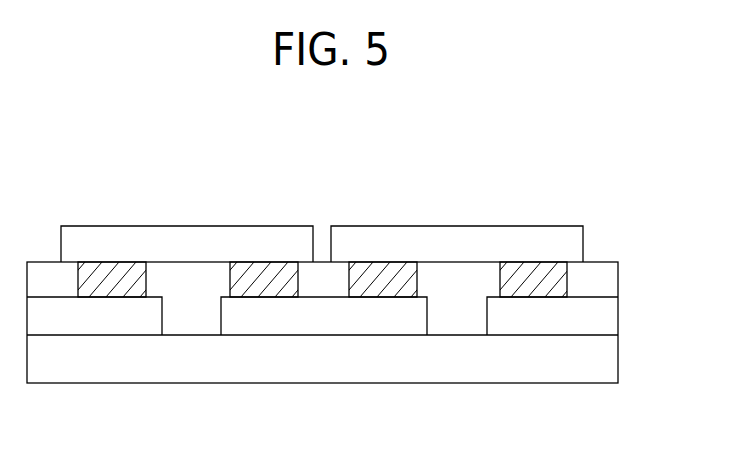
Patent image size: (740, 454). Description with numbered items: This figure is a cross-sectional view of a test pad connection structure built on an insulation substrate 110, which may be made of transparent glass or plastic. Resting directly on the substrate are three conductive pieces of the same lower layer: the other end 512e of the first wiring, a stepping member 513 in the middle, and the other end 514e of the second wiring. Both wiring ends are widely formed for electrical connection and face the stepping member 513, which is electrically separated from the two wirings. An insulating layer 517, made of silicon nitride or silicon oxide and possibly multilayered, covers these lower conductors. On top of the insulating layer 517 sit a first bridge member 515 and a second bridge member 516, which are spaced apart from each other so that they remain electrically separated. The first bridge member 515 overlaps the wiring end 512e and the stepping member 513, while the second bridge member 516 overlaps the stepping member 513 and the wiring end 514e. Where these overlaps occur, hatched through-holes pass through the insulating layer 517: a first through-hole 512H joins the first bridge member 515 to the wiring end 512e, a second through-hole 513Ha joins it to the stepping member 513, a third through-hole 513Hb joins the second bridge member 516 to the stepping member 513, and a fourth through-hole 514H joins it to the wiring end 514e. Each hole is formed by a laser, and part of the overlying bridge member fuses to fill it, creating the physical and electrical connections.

The insulation substrate 110 is at (618, 365).
The other end of the first wiring 512e is at (93, 318).
The insulating layer 517 is at (188, 318).
The stepping member 513 is at (298, 318).
The other end of the second wiring 514e is at (536, 318).
The first bridge member 515 is at (182, 226).
The second bridge member 516 is at (460, 226).
The first through-hole 512H is at (110, 290).
The second through-hole 513Ha is at (263, 290).
The third through-hole 513Hb is at (383, 290).
The fourth through-hole 514H is at (537, 290).